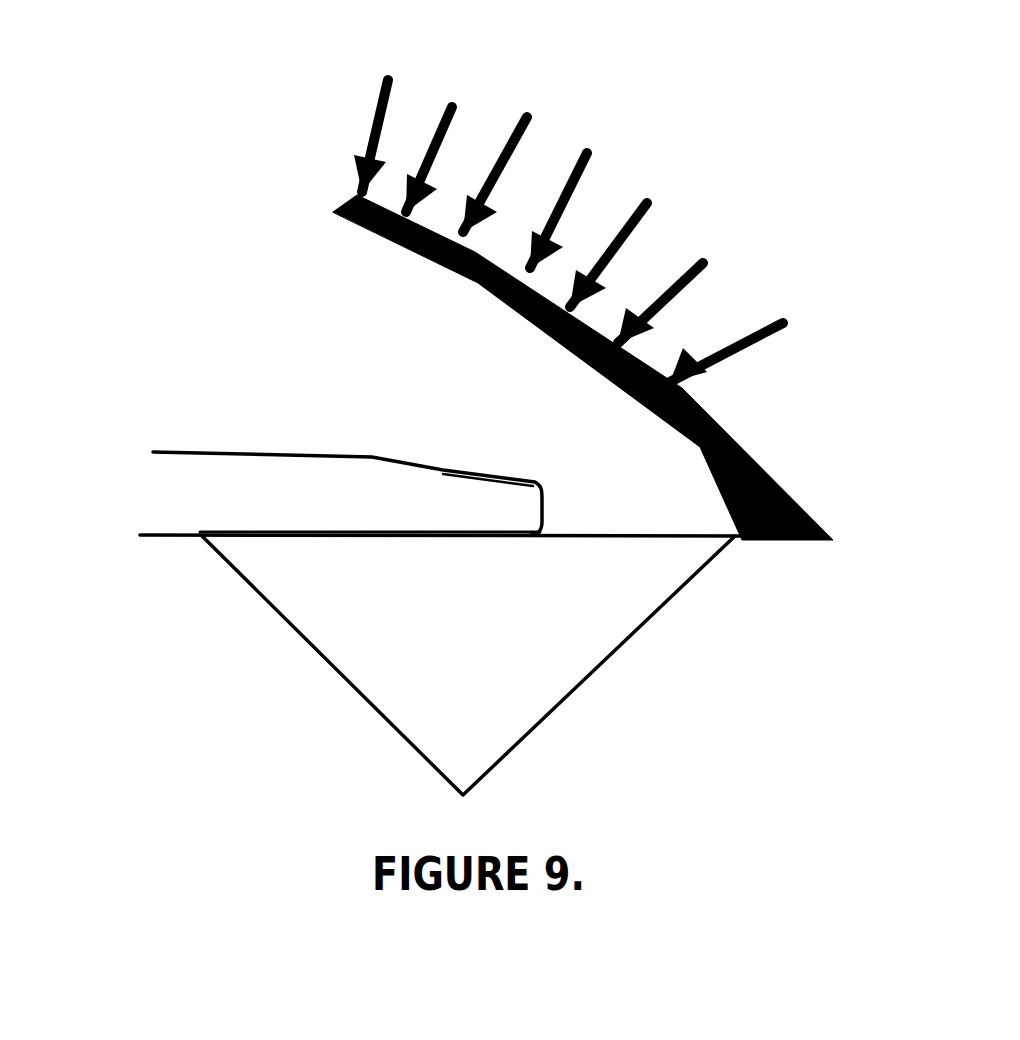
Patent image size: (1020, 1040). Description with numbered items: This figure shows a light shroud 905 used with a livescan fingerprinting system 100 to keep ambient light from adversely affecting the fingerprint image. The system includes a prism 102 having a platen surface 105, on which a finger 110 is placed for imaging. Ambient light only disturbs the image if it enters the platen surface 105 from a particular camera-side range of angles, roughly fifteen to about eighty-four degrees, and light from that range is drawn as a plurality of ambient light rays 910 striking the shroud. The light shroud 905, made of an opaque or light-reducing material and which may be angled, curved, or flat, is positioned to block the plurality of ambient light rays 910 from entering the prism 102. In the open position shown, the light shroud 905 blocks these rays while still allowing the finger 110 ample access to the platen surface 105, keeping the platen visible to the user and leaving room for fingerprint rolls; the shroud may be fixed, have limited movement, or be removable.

The livescan fingerprinting system 100 is at (130, 707).
The prism 102 is at (597, 668).
The platen surface 105 is at (606, 535).
The finger 110 is at (270, 452).
The light shroud 905 is at (743, 447).
The plurality of ambient light rays 910 is at (365, 42).